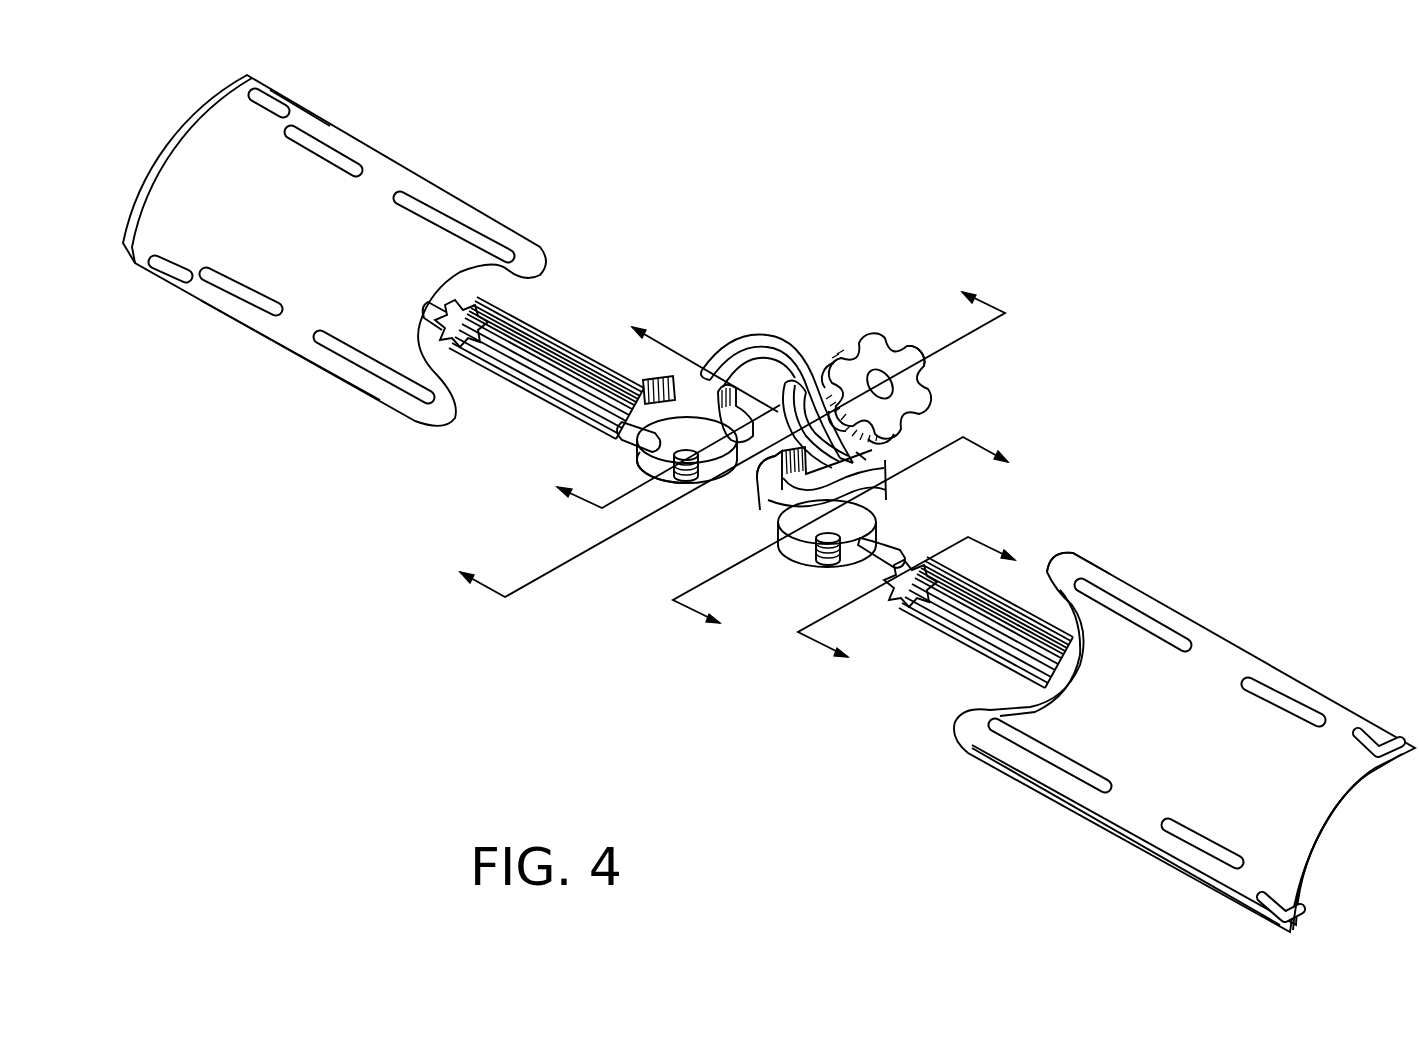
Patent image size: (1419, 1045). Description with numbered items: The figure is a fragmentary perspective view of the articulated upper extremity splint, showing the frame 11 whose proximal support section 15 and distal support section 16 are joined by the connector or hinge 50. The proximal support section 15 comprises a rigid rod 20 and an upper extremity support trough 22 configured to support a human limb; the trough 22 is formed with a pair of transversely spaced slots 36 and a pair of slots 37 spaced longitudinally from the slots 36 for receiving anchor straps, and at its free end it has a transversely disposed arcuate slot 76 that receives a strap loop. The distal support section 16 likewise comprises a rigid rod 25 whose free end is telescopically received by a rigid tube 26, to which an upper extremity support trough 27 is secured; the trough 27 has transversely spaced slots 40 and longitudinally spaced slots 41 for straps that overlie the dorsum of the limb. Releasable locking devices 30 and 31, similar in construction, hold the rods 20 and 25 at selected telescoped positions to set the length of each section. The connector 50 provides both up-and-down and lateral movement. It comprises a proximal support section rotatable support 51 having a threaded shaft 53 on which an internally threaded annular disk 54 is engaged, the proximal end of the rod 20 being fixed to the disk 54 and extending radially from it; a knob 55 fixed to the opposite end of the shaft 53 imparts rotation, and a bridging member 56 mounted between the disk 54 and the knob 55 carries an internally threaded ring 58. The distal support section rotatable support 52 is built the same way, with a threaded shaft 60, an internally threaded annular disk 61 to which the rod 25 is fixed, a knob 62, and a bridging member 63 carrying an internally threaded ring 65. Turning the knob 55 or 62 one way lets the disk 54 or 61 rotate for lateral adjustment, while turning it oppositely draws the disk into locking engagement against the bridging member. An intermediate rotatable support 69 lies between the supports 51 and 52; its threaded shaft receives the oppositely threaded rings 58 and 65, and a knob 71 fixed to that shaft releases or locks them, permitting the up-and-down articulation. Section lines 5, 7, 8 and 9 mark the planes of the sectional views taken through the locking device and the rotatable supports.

The section line 5- 5 is at (917, 606).
The section line 7- 7 is at (852, 540).
The section line 8- 8 is at (655, 408).
The section line 9- 9 is at (720, 432).
The frame 11 is at (289, 354).
The proximal support section 15 is at (1185, 729).
The distal support section 16 is at (334, 250).
The rigid rod 20 is at (895, 565).
The upper extremity support trough 22 is at (1116, 567).
The rigid rod 25 is at (633, 460).
The rigid tube 26 is at (432, 304).
The upper extremity support trough 27 is at (308, 108).
The releasable locking device 30 is at (990, 643).
The releasable locking device 31 is at (521, 320).
The slots 36 is at (1309, 720).
The slots 37 is at (1175, 637).
The slots 40 is at (356, 168).
The slots 41 is at (510, 254).
The connector 50 is at (768, 347).
The proximal support section rotatable support 51 is at (776, 528).
The distal support section rotatable support 52 is at (652, 464).
The threaded shaft 53 is at (828, 563).
The internally threaded annular disk 54 is at (870, 458).
The knob 55 is at (768, 505).
The bridging member 56 is at (862, 458).
The ring 58 is at (758, 392).
The threaded shaft 60 is at (652, 464).
The internally threaded annular disk 61 is at (703, 478).
The knob 62 is at (668, 378).
The bridging member 63 is at (759, 336).
The ring 65 is at (910, 392).
The intermediate rotatable support 69 is at (902, 350).
The knob 71 is at (882, 357).
The arcuate slot 76 is at (1357, 773).